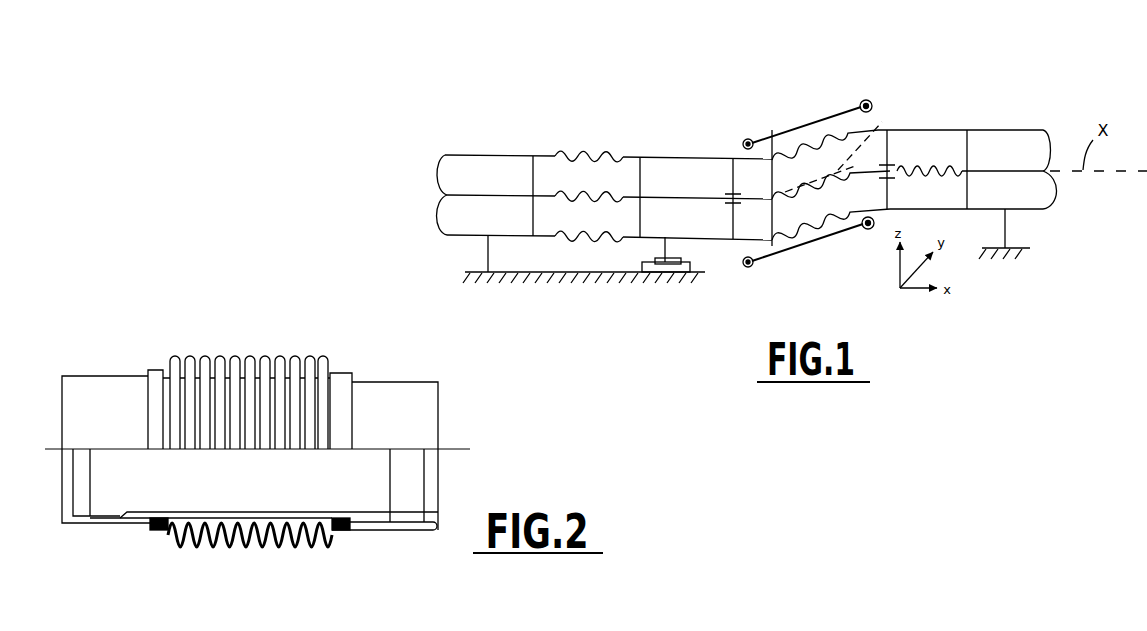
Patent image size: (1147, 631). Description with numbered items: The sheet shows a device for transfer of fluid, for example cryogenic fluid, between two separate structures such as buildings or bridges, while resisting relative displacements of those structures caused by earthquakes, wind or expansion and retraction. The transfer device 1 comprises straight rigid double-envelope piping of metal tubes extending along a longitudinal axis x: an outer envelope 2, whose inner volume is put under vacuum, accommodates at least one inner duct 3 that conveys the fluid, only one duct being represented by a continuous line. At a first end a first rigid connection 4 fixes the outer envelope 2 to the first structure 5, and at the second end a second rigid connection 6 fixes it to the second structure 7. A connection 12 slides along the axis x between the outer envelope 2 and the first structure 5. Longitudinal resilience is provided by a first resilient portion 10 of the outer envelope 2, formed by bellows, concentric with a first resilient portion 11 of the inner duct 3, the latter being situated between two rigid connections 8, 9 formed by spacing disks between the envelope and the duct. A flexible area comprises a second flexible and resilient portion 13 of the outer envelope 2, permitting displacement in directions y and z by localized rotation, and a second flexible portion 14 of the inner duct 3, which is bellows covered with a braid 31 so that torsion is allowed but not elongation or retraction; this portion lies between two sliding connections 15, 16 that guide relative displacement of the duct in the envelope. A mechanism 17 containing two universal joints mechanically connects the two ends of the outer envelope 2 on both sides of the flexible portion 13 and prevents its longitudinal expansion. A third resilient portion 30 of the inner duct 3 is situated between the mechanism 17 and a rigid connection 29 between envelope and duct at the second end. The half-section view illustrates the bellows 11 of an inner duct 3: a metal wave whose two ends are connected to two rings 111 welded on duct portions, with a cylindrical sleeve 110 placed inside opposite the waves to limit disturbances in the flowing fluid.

In FIG. 1, the transfer device 1 is at (762, 48).
In FIG. 1, the outer envelope 2 is at (470, 152).
In FIG. 1, the inner duct 3 is at (499, 189).
In FIG. 2, the inner duct 3 is at (112, 375).
In FIG. 1, the first rigid connection 4 is at (483, 243).
In FIG. 1, the first structure 5 is at (538, 279).
In FIG. 1, the second rigid connection 6 is at (1014, 223).
In FIG. 1, the second structure 7 is at (1043, 254).
In FIG. 1, the rigid connection 8 is at (530, 198).
In FIG. 1, the rigid connection 9 is at (655, 204).
In FIG. 1, the first resilient portion of the outer envelope 10 is at (618, 151).
In FIG. 1, the first resilient portion of the inner duct 11 is at (602, 208).
In FIG. 2, the first resilient portion of the inner duct 11 is at (243, 352).
In FIG. 1, the sliding connection 12 is at (668, 277).
In FIG. 1, the second flexible and resilient portion of the outer envelope 13 is at (830, 128).
In FIG. 1, the second flexible portion of the inner duct 14 is at (835, 186).
In FIG. 1, the sliding connection 15 is at (730, 189).
In FIG. 1, the sliding connection 16 is at (894, 158).
In FIG. 1, the mechanism of universal joints 17 is at (773, 133).
In FIG. 1, the rigid connection 29 is at (972, 168).
In FIG. 1, the third resilient portion of the inner duct 30 is at (938, 184).
In FIG. 1, the braid 31 is at (881, 118).
In FIG. 2, the cylindrical sleeve 110 is at (356, 454).
In FIG. 2, the rings 111 is at (157, 536).